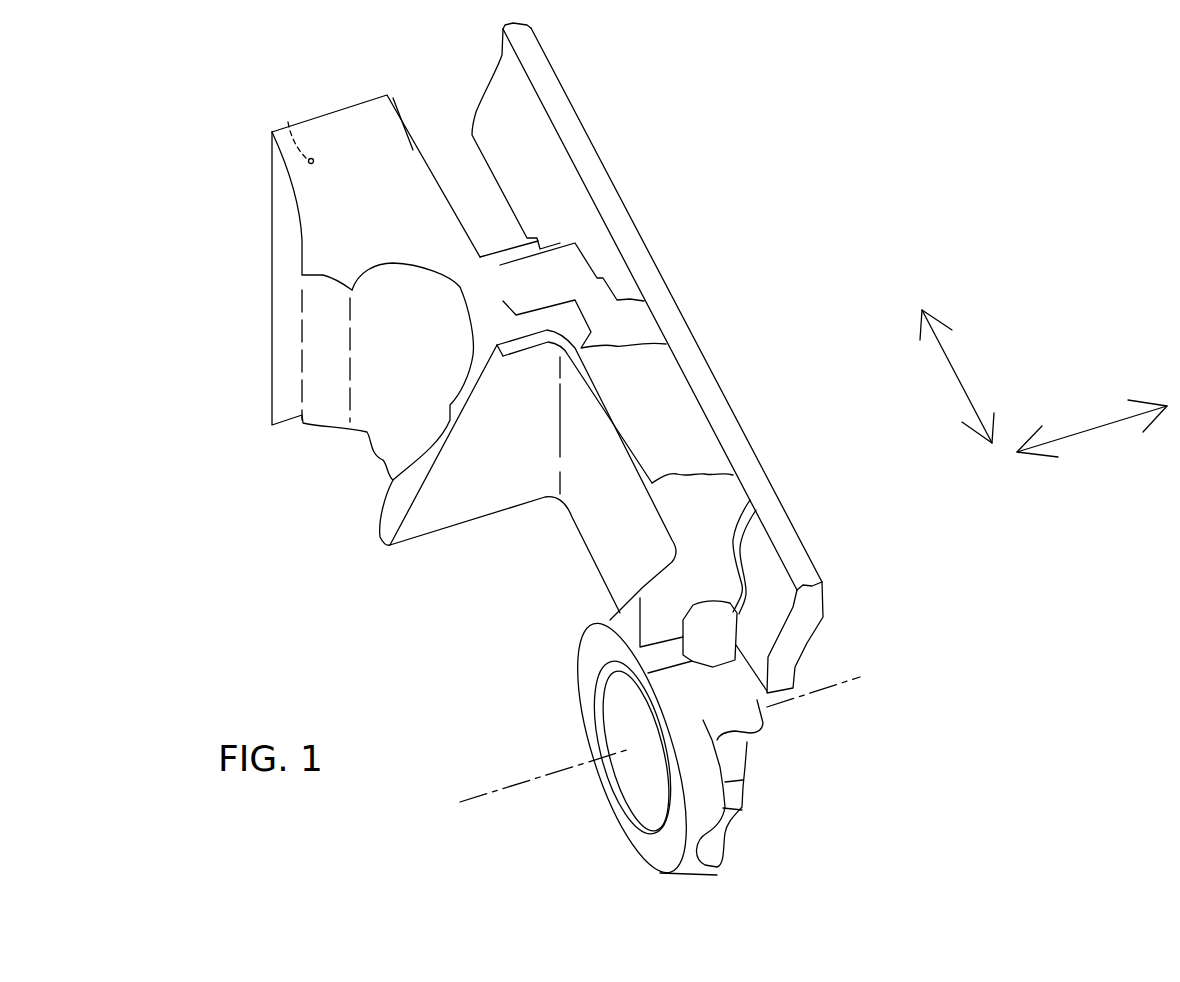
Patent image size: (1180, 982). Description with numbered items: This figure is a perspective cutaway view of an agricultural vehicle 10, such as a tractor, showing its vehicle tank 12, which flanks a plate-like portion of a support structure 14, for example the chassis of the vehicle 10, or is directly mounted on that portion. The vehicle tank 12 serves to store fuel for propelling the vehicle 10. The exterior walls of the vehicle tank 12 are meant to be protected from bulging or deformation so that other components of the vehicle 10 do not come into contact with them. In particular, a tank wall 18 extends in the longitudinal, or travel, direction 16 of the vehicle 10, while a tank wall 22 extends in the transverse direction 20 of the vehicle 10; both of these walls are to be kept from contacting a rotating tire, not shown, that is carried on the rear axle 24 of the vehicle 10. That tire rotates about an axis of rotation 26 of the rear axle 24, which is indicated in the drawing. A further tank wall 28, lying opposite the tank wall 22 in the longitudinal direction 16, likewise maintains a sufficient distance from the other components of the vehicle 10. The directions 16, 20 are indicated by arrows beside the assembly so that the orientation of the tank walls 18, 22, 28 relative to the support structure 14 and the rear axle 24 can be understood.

The agricultural vehicle 10 is at (847, 97).
The vehicle tank 12 is at (347, 153).
The support structure 14 is at (563, 120).
The longitudinal direction 16 is at (945, 348).
The tank wall 18 is at (613, 513).
The transverse direction 20 is at (1110, 420).
The tank wall 22 is at (470, 488).
The rear axle 24 is at (730, 743).
The axis of rotation 26 is at (483, 798).
The tank wall 28 is at (288, 122).